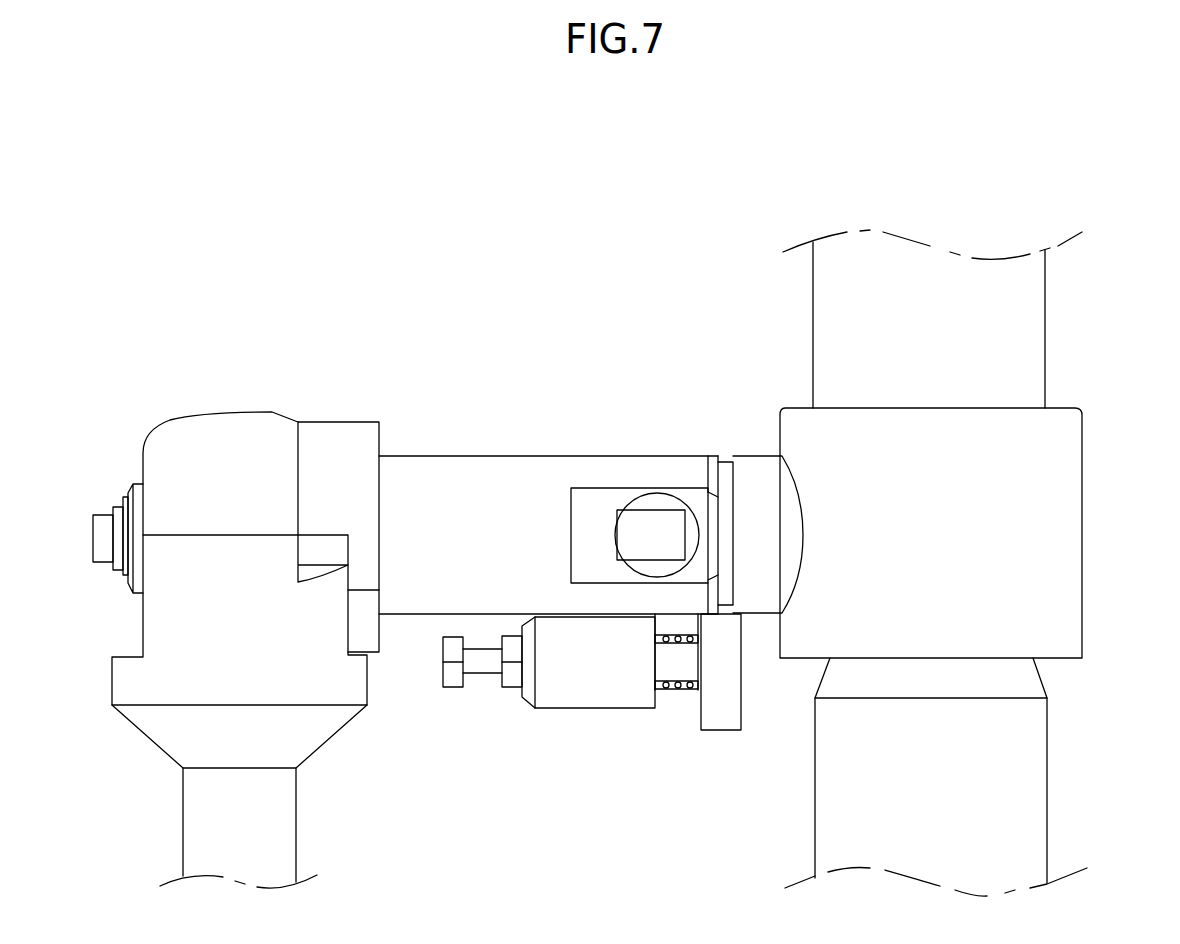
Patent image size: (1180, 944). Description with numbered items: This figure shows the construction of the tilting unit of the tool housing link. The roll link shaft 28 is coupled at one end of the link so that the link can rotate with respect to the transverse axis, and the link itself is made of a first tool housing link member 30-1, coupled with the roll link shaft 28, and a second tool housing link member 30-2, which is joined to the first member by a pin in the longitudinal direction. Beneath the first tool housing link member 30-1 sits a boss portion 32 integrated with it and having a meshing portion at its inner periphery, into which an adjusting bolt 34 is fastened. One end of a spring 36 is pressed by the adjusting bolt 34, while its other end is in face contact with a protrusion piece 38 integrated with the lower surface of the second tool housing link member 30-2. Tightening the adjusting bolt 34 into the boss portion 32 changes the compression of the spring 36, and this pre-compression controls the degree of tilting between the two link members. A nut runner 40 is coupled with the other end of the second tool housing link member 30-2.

The roll link shaft 28 is at (205, 840).
The first tool housing link member 30-1 is at (454, 475).
The second tool housing link member 30-2 is at (753, 475).
The boss portion 32 is at (597, 697).
The adjusting bolt 34 is at (453, 678).
The spring 36 is at (683, 690).
The protrusion piece 38 is at (727, 725).
The nut runner 40 is at (1013, 795).